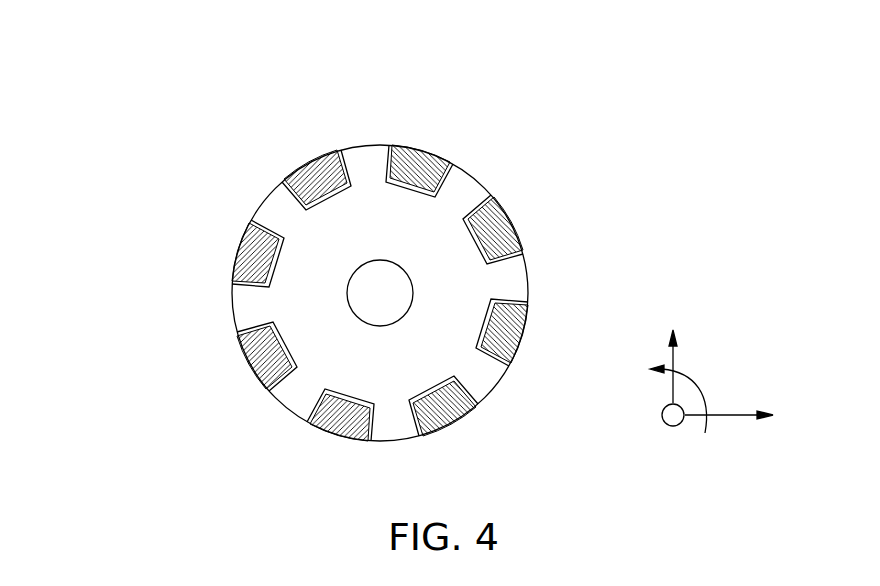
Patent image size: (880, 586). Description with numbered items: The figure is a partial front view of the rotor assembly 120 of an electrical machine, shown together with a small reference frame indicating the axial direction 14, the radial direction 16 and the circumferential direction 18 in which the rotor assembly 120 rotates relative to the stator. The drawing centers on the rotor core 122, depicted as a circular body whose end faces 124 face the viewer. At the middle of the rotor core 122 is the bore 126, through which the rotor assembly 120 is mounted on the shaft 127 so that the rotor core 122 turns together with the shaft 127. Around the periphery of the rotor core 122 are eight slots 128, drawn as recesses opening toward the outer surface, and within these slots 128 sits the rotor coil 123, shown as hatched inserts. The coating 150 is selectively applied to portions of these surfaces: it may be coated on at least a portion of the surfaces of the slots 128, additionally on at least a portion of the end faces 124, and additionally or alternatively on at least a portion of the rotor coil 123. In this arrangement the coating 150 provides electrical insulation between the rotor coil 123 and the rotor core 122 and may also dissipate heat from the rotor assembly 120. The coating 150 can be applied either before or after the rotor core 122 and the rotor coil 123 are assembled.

The rotor assembly 120 is at (172, 60).
The rotor core 122 is at (365, 145).
The rotor coil 123 is at (283, 185).
The end faces 124 is at (257, 313).
The bore 126 is at (355, 320).
The shaft 127 is at (362, 306).
The slots 128 is at (522, 323).
The coating 150 is at (430, 240).
The radial direction 16 is at (676, 333).
The circumferential direction 18 is at (697, 385).
The axial direction 14 is at (670, 428).